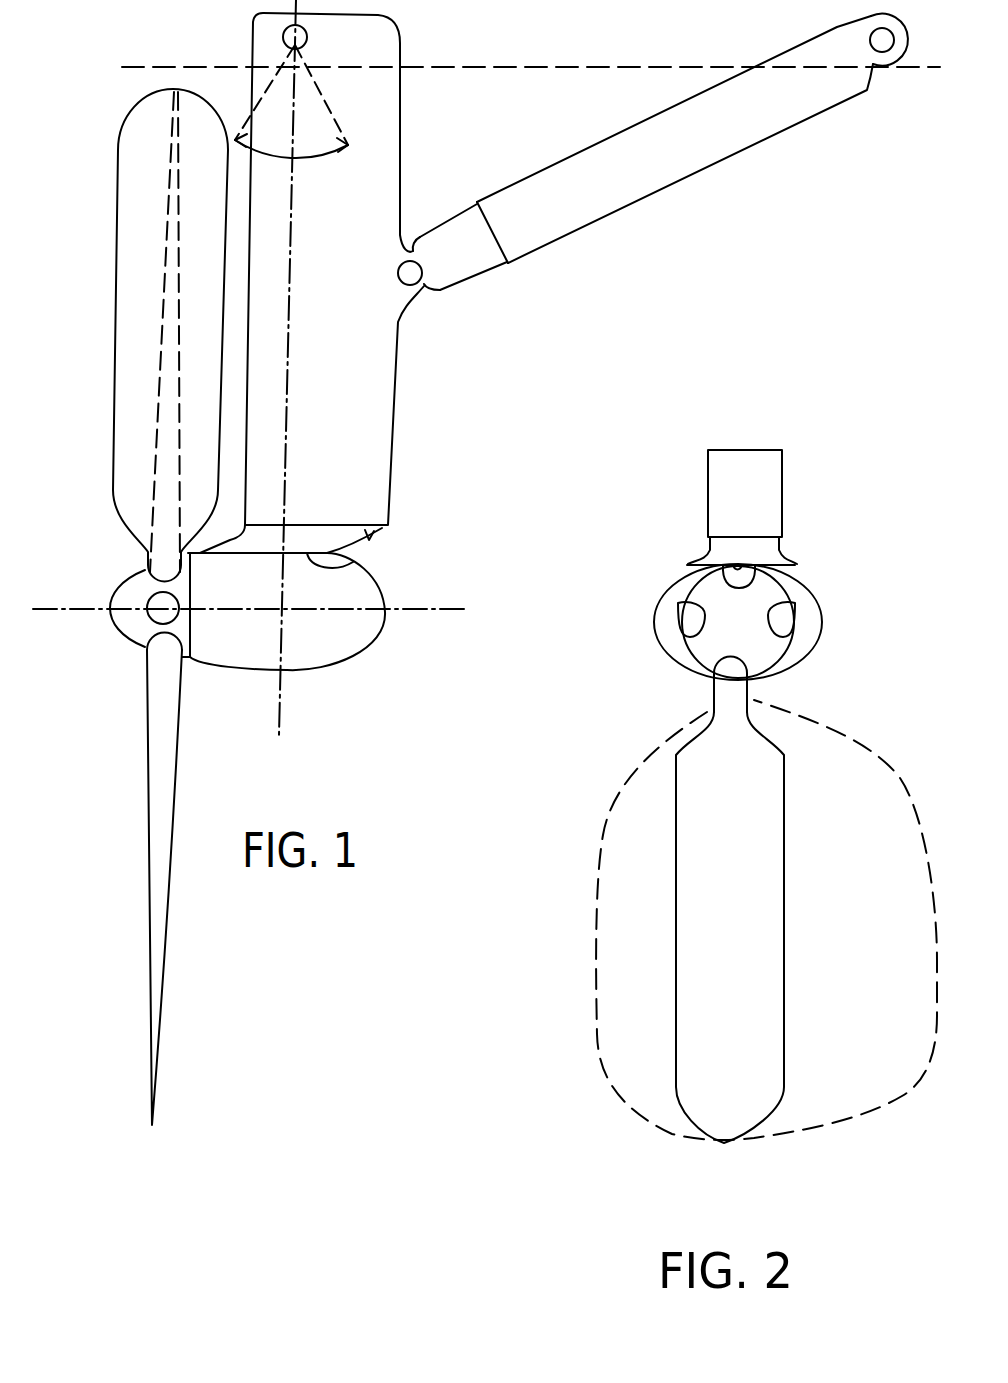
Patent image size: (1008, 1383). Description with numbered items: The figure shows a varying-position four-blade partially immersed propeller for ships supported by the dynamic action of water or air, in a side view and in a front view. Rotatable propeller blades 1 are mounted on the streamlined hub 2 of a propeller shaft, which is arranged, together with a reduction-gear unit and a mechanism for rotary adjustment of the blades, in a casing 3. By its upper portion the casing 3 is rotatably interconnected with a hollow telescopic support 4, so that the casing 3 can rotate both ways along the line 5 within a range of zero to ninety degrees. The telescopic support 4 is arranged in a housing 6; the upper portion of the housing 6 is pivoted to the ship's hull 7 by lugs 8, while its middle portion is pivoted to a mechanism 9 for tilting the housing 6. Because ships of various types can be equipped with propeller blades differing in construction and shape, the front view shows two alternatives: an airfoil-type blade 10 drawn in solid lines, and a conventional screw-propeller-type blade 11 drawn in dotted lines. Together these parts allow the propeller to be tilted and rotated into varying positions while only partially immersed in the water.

In FIG. 1, the propeller blades 1 is at (143, 277).
In FIG. 1, the streamlined hub 2 is at (130, 592).
In FIG. 2, the streamlined hub 2 is at (767, 647).
In FIG. 1, the casing 3 is at (367, 618).
In FIG. 2, the casing 3 is at (665, 622).
In FIG. 1, the hollow telescopic support 4 is at (373, 540).
In FIG. 2, the hollow telescopic support 4 is at (720, 555).
In FIG. 1, the line 5 is at (363, 560).
In FIG. 2, the line 5 is at (780, 555).
In FIG. 1, the housing 6 is at (373, 371).
In FIG. 2, the housing 6 is at (735, 492).
In FIG. 1, the ship's hull 7 is at (517, 62).
In FIG. 1, the lugs 8 is at (275, 58).
In FIG. 1, the mechanism for tilting the housing 9 is at (550, 227).
In FIG. 2, the blade 10 is at (711, 833).
In FIG. 2, the blade 11 is at (644, 872).